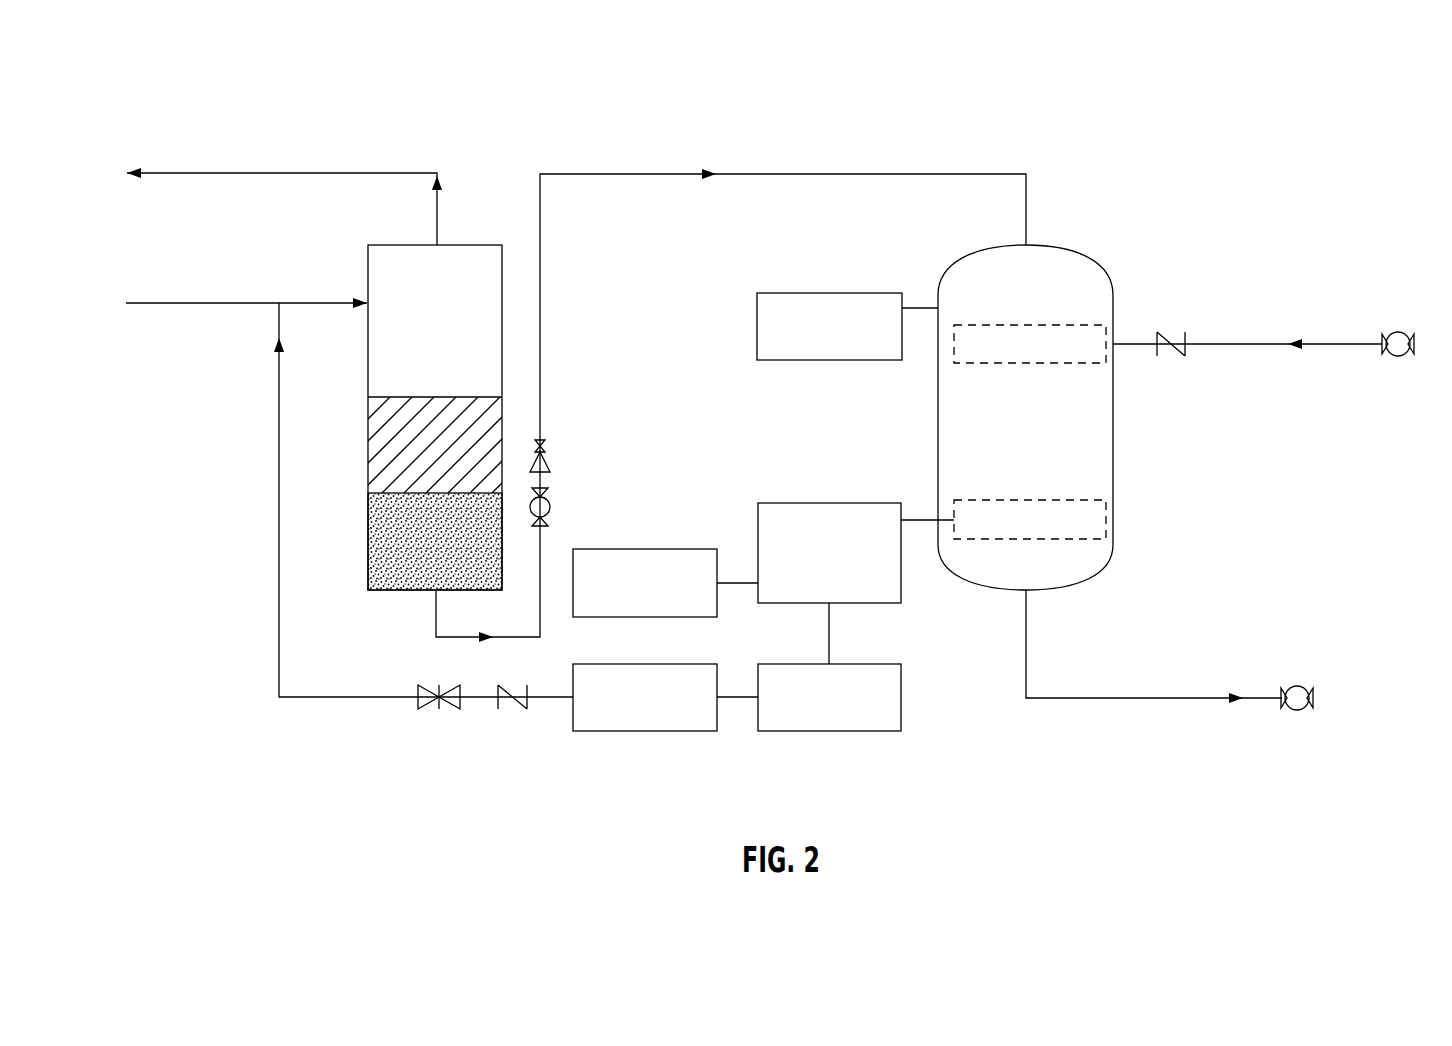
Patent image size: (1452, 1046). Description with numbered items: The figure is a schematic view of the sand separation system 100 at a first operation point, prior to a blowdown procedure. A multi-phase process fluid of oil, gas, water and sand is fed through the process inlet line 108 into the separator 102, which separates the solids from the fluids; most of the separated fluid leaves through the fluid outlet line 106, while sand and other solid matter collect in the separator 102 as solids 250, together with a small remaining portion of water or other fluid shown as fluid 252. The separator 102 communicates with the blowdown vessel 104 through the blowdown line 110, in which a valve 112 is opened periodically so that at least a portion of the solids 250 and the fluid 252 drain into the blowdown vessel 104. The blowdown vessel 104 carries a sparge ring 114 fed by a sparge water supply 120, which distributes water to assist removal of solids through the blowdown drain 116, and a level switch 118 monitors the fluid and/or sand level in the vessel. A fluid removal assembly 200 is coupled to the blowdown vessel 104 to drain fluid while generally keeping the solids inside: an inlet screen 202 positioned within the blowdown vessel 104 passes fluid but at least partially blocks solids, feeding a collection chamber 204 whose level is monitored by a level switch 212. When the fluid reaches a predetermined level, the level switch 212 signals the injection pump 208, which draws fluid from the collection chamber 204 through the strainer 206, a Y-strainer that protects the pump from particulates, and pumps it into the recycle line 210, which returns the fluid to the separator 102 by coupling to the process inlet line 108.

The sand separation system 100 is at (180, 58).
The separator 102 is at (458, 245).
The blowdown vessel 104 is at (1068, 248).
The fluid outlet line 106 is at (353, 173).
The process inlet line 108 is at (205, 305).
The blowdown line 110 is at (628, 174).
The valve 112 is at (550, 503).
The sparge ring 114 is at (1026, 363).
The blowdown drain 116 is at (1100, 698).
The level switch 118 is at (830, 293).
The sparge water supply 120 is at (1398, 356).
The fluid removal assembly 200 is at (790, 782).
The inlet screen 202 is at (1020, 500).
The collection chamber 204 is at (828, 503).
The strainer 206 is at (838, 731).
The injection pump 208 is at (642, 731).
The recycle line 210 is at (352, 697).
The level switch 212 is at (642, 549).
The solids 250 is at (368, 545).
The fluid 252 is at (368, 460).